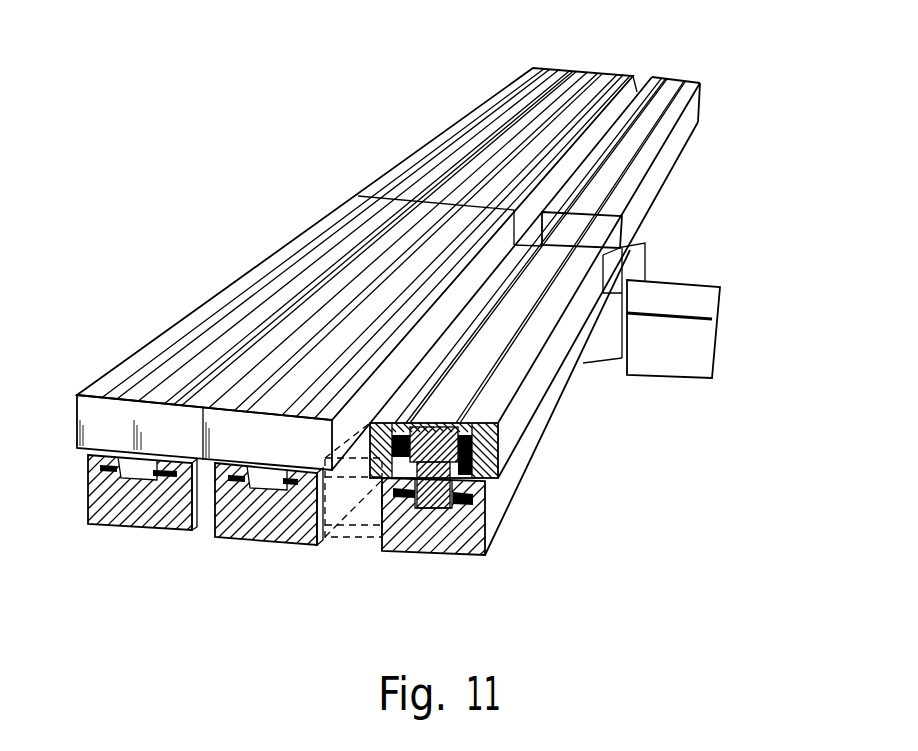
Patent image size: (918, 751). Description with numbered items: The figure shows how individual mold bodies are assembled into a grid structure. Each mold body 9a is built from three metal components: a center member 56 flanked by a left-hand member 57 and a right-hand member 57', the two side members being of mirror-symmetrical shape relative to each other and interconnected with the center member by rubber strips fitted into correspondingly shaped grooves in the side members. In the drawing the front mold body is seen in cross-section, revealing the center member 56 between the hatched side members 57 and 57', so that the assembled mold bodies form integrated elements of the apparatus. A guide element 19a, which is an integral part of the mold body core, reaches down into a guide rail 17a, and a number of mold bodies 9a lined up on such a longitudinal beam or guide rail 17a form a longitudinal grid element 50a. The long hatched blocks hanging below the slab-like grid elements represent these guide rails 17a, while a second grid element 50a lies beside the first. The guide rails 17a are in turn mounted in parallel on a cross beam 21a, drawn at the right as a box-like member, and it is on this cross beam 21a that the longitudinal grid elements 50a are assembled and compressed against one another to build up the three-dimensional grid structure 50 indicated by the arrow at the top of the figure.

The three-dimensional grid structure 50 is at (380, 115).
The longitudinal grid element 50a is at (562, 67).
The mold body 9a is at (709, 88).
The center member 56 is at (466, 407).
The left-hand member 57 is at (493, 467).
The right-hand member 57' is at (353, 503).
The guide element 19a is at (434, 548).
The guide rail 17a is at (261, 528).
The cross beam 21a is at (685, 358).